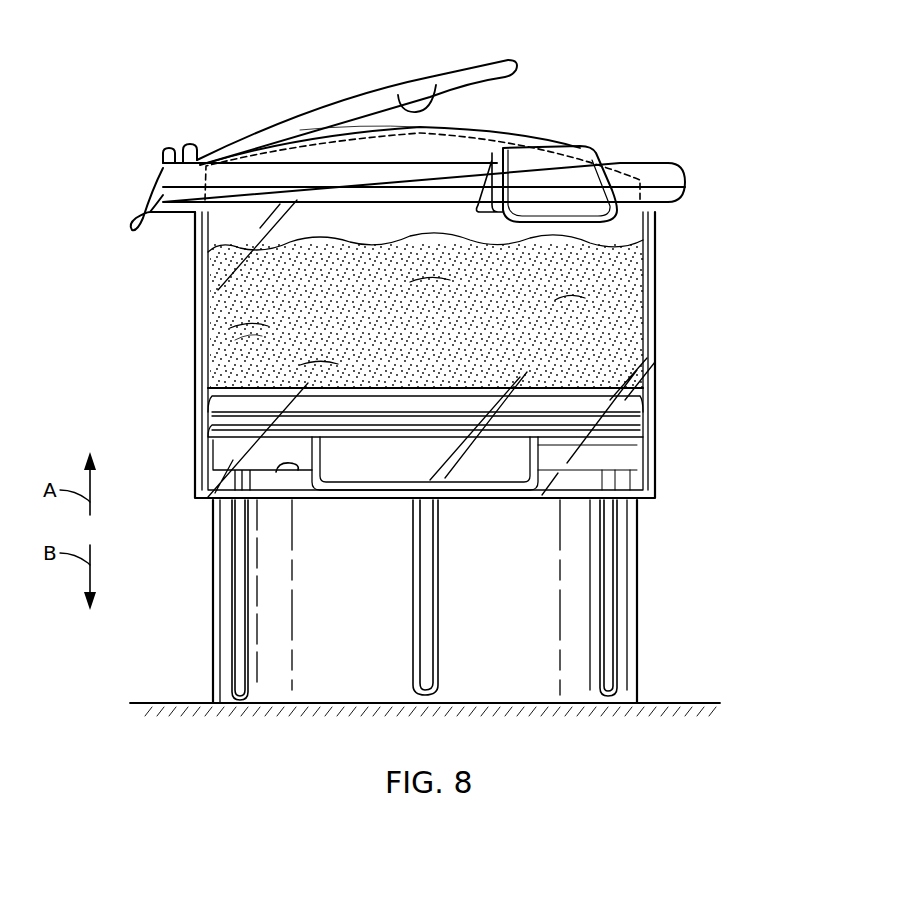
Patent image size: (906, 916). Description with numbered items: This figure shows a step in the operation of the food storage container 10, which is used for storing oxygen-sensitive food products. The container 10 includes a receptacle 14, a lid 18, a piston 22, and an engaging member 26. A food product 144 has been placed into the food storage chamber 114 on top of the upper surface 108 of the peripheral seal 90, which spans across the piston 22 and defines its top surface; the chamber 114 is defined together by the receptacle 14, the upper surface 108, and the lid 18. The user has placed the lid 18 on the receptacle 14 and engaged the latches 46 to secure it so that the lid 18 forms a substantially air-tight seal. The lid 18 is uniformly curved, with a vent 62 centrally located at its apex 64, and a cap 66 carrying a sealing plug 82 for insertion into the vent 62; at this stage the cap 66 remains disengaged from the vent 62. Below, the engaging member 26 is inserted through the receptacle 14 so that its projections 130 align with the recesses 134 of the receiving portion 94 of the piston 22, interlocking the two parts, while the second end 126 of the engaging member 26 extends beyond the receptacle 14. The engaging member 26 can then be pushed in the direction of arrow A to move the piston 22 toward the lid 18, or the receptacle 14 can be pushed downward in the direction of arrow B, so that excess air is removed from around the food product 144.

The food storage container 10 is at (748, 138).
The receptacle 14 is at (655, 262).
The lid 18 is at (513, 135).
The piston 22 is at (625, 448).
The engaging member 26 is at (640, 588).
The latches 46 is at (603, 185).
The vent 62 is at (384, 132).
The apex 64 is at (390, 127).
The cap 66 is at (345, 103).
The sealing plug 82 is at (437, 86).
The peripheral seal 90 is at (635, 405).
The receiving portion 94 is at (587, 461).
The upper support surface 108 is at (440, 335).
The food storage chamber 114 is at (225, 342).
The second end 126 is at (500, 708).
The projections 130 is at (285, 478).
The recesses 134 is at (262, 478).
The food product 144 is at (603, 318).